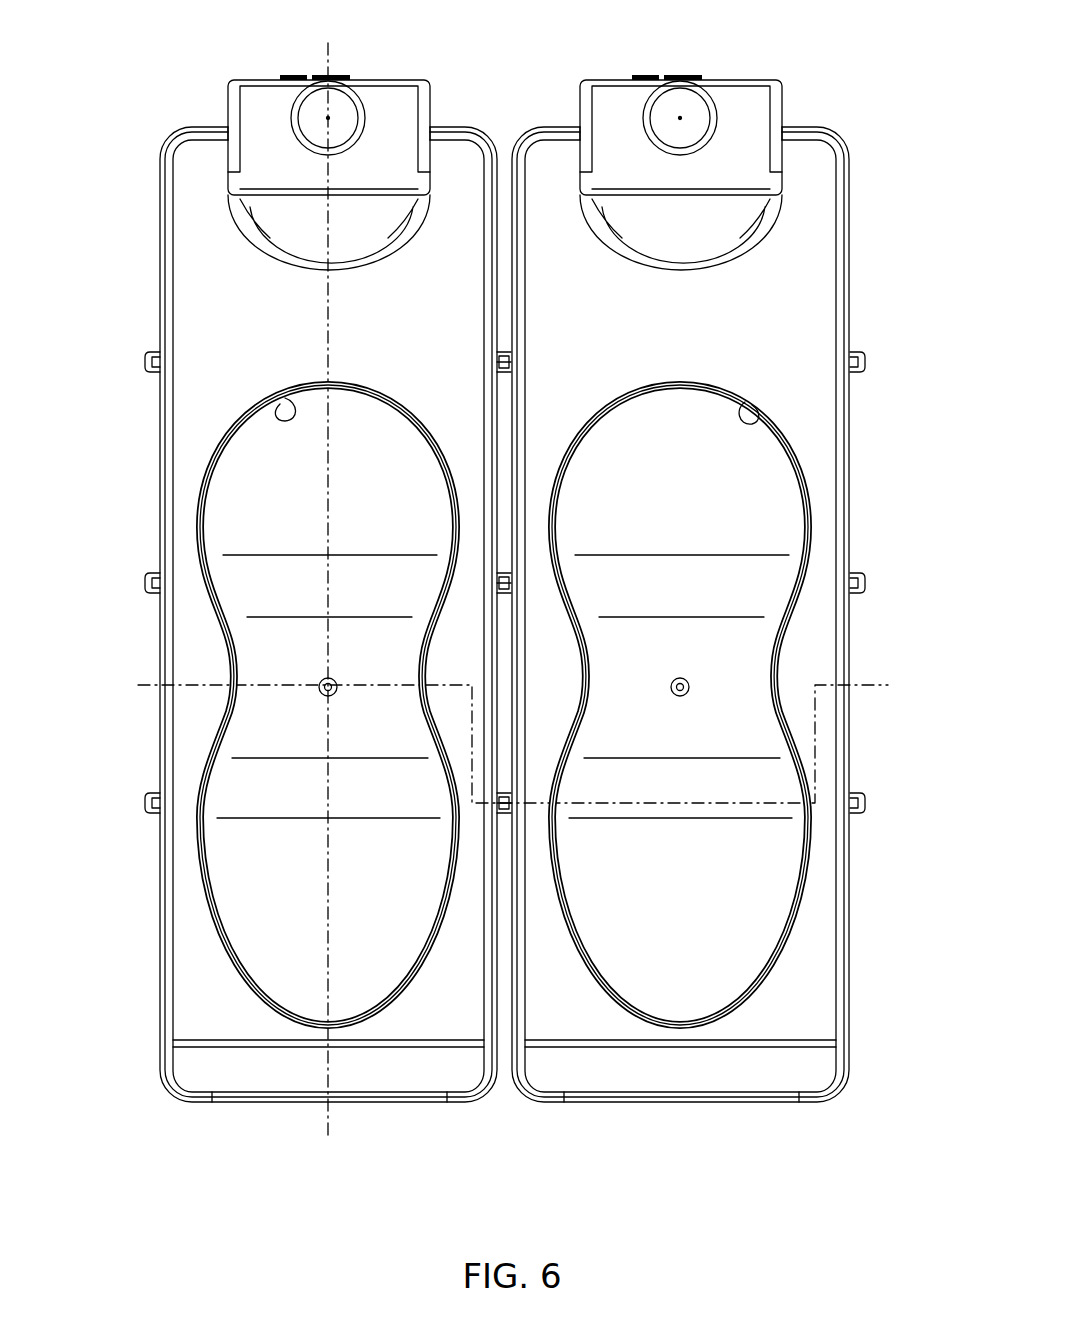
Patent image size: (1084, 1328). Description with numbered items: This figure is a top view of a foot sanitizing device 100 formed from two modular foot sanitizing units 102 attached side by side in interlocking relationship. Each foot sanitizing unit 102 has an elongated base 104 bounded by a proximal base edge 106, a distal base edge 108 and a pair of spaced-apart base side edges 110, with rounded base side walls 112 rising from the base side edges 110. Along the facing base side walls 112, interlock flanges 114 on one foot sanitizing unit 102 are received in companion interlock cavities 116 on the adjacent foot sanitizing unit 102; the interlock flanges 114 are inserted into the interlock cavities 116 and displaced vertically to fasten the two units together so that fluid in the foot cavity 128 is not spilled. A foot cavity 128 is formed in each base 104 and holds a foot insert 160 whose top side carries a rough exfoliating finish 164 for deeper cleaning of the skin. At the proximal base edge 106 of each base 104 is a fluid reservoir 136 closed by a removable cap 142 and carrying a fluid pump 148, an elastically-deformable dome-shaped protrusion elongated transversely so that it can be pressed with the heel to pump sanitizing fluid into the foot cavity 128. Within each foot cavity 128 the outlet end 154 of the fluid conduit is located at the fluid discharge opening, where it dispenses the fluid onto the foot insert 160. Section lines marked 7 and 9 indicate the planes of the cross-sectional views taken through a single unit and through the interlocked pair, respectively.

The foot sanitizing device 100 is at (133, 83).
The foot sanitizing unit 102 is at (420, 1106).
The base 104 is at (168, 230).
The proximal base edge 106 is at (435, 130).
The distal base edge 108 is at (385, 1104).
The base side edges 110 is at (170, 497).
The base side walls 112 is at (168, 436).
The interlock flange 114 is at (146, 360).
The interlock cavity 116 is at (511, 357).
The foot cavity 128 is at (286, 398).
The fluid reservoir 136 is at (408, 72).
The cap 142 is at (340, 108).
The fluid pump 148 is at (345, 246).
The outlet end 154 is at (333, 678).
The foot insert 160 is at (228, 424).
The exfoliating finish 164 is at (255, 512).
The section line 7- 7 is at (328, 43).
The section line 9- 9 is at (138, 685).